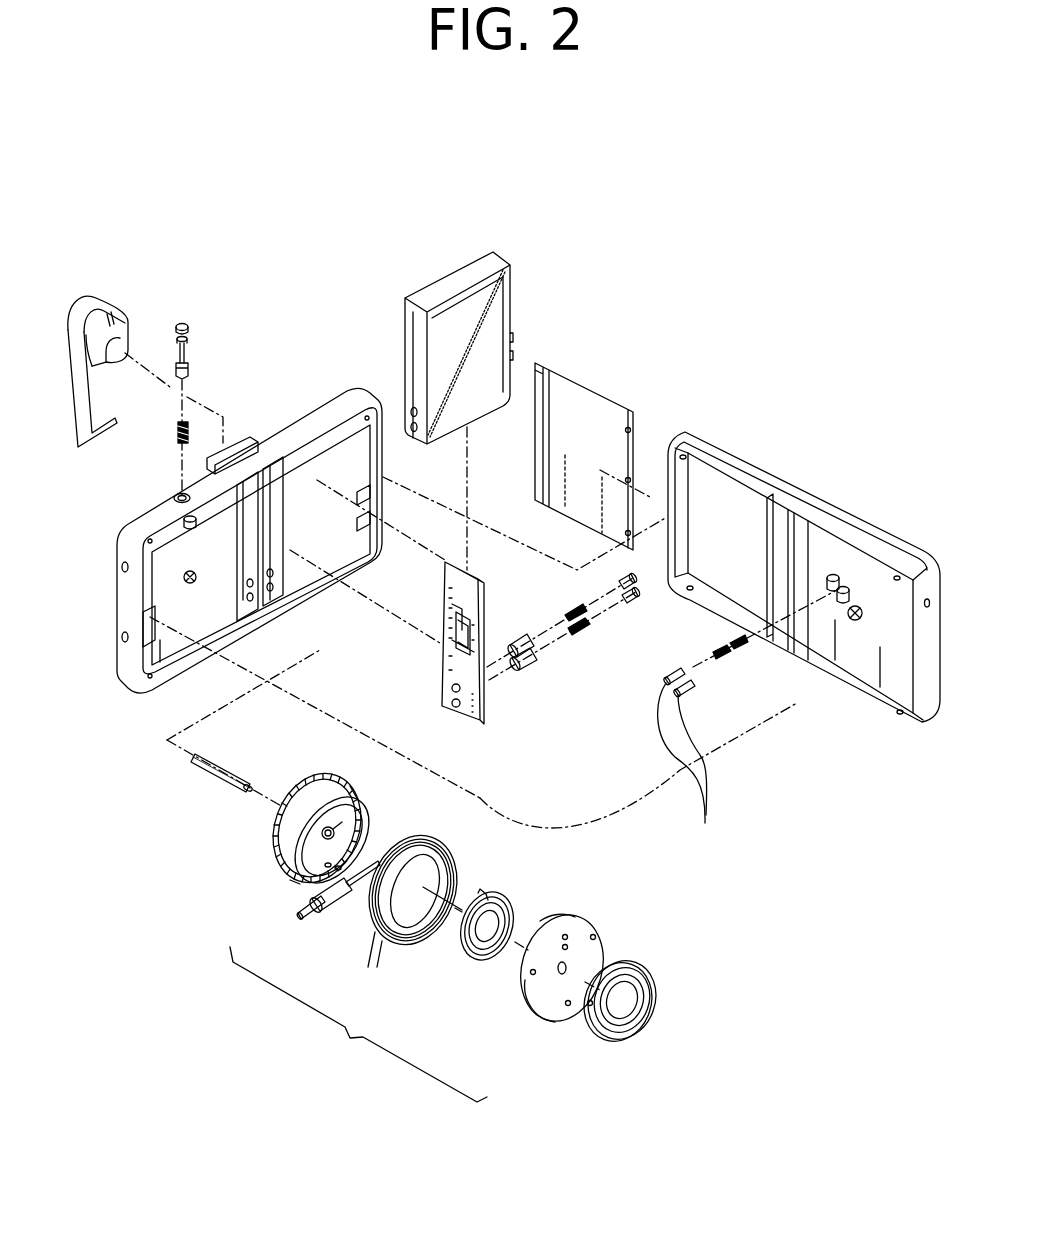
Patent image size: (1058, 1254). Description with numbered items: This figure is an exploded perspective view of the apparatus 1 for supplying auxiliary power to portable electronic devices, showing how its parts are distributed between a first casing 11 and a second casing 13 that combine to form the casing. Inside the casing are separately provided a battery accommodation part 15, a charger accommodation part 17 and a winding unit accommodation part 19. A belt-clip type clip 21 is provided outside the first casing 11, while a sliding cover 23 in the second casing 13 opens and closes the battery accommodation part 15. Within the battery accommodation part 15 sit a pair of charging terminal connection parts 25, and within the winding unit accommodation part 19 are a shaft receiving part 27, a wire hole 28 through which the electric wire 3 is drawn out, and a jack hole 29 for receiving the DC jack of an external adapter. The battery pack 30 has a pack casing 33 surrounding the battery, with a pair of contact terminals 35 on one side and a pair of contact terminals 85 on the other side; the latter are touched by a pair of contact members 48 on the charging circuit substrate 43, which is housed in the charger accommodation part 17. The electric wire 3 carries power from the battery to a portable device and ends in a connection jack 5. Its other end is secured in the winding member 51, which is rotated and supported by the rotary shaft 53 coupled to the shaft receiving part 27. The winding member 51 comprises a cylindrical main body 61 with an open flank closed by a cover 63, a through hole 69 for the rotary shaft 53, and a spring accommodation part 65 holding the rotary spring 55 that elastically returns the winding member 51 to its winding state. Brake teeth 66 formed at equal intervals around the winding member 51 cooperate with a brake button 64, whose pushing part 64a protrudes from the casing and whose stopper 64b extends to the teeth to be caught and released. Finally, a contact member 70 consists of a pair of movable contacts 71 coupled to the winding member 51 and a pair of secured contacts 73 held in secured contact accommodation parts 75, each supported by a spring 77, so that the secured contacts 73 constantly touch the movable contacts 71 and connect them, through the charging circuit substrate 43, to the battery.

The apparatus for supplying auxiliary power 1 is at (794, 274).
The electric wire 3 is at (460, 864).
The connection jack 5 is at (430, 879).
The first casing 11 is at (248, 528).
The second casing 13 is at (804, 559).
The battery accommodation part 15 is at (294, 518).
The charger accommodation part 17 is at (272, 486).
The winding unit accommodation part 19 is at (209, 566).
The clip 21 is at (131, 325).
The sliding cover 23 is at (592, 388).
The charging terminal connection parts 25 is at (370, 519).
The shaft receiving part 27 is at (193, 584).
The wire hole 28 is at (122, 570).
The jack hole 29 is at (124, 641).
The battery pack 30 is at (463, 365).
The pack casing 33 is at (410, 346).
The contact terminals 35 is at (512, 333).
The charging circuit substrate 43 is at (486, 711).
The contact members 48 is at (583, 634).
The winding member 51 is at (328, 1068).
The rotary shaft 53 is at (213, 784).
The rotary spring 55 is at (459, 958).
The main body 61 is at (325, 840).
The cover 63 is at (530, 1018).
The brake button 64 is at (228, 357).
The pushing part 64a is at (188, 320).
The stopper 64b is at (190, 366).
The spring accommodation part 65 is at (376, 859).
The brake teeth 66 is at (316, 778).
The through hole 69 is at (357, 833).
The contact member 70 is at (671, 859).
The movable contacts 71 is at (645, 965).
The secured contacts 73 is at (685, 760).
The secured contact accommodation parts 75 is at (832, 576).
The spring 77 is at (733, 652).
The contact terminals 85 is at (420, 428).